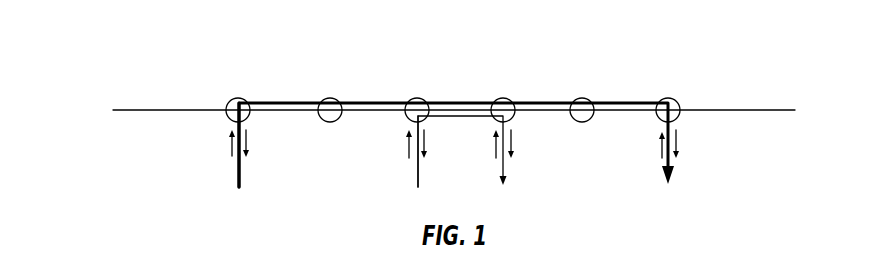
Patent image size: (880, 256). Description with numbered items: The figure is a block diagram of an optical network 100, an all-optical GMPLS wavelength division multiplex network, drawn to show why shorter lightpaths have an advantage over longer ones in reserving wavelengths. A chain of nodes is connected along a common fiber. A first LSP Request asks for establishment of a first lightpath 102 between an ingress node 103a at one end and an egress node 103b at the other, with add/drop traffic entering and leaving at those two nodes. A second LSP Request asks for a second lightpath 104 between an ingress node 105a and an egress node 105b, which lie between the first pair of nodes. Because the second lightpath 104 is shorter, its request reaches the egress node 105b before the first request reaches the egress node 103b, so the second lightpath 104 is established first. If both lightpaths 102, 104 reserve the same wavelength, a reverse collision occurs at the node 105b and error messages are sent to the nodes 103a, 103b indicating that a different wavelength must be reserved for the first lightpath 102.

The optical network 100 is at (163, 55).
The first lightpath 102 is at (241, 178).
The ingress node 103a is at (247, 123).
The egress node 103b is at (664, 100).
The second lightpath 104 is at (419, 178).
The ingress node 105a is at (412, 100).
The egress node 105b is at (499, 100).